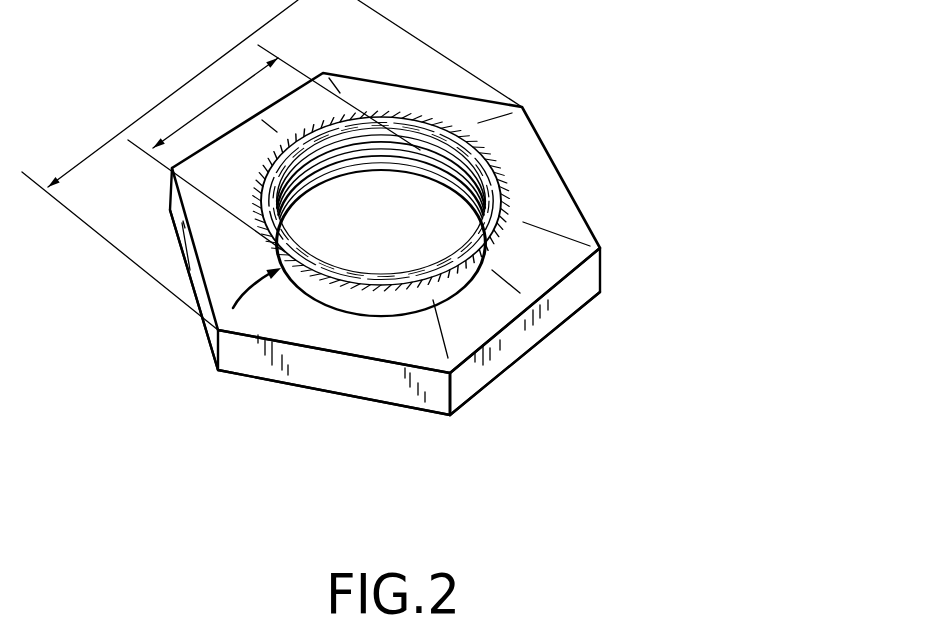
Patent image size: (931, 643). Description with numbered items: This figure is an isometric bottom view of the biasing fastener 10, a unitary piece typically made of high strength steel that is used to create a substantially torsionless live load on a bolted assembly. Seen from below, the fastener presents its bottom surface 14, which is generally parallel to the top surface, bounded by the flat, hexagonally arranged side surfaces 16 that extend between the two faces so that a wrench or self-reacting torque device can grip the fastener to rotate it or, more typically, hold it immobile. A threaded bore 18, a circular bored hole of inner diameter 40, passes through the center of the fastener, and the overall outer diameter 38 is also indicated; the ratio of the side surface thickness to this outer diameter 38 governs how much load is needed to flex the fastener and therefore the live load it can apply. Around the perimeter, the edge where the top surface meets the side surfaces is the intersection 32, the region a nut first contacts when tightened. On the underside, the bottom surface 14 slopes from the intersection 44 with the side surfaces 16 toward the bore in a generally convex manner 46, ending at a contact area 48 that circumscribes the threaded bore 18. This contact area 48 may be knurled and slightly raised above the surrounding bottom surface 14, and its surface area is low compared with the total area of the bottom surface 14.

The biasing fastener 10 is at (694, 94).
The bottom surface 14 is at (335, 327).
The side surfaces 16 is at (567, 302).
The threaded bore 18 is at (457, 190).
The intersection of the top surface and side surfaces 32 is at (367, 395).
The outer diameter 38 is at (272, 165).
The inner diameter 40 is at (274, 148).
The intersection of the bottom surface and side surfaces 44 is at (438, 374).
The convex manner 46 is at (238, 288).
The contact area 48 is at (502, 193).